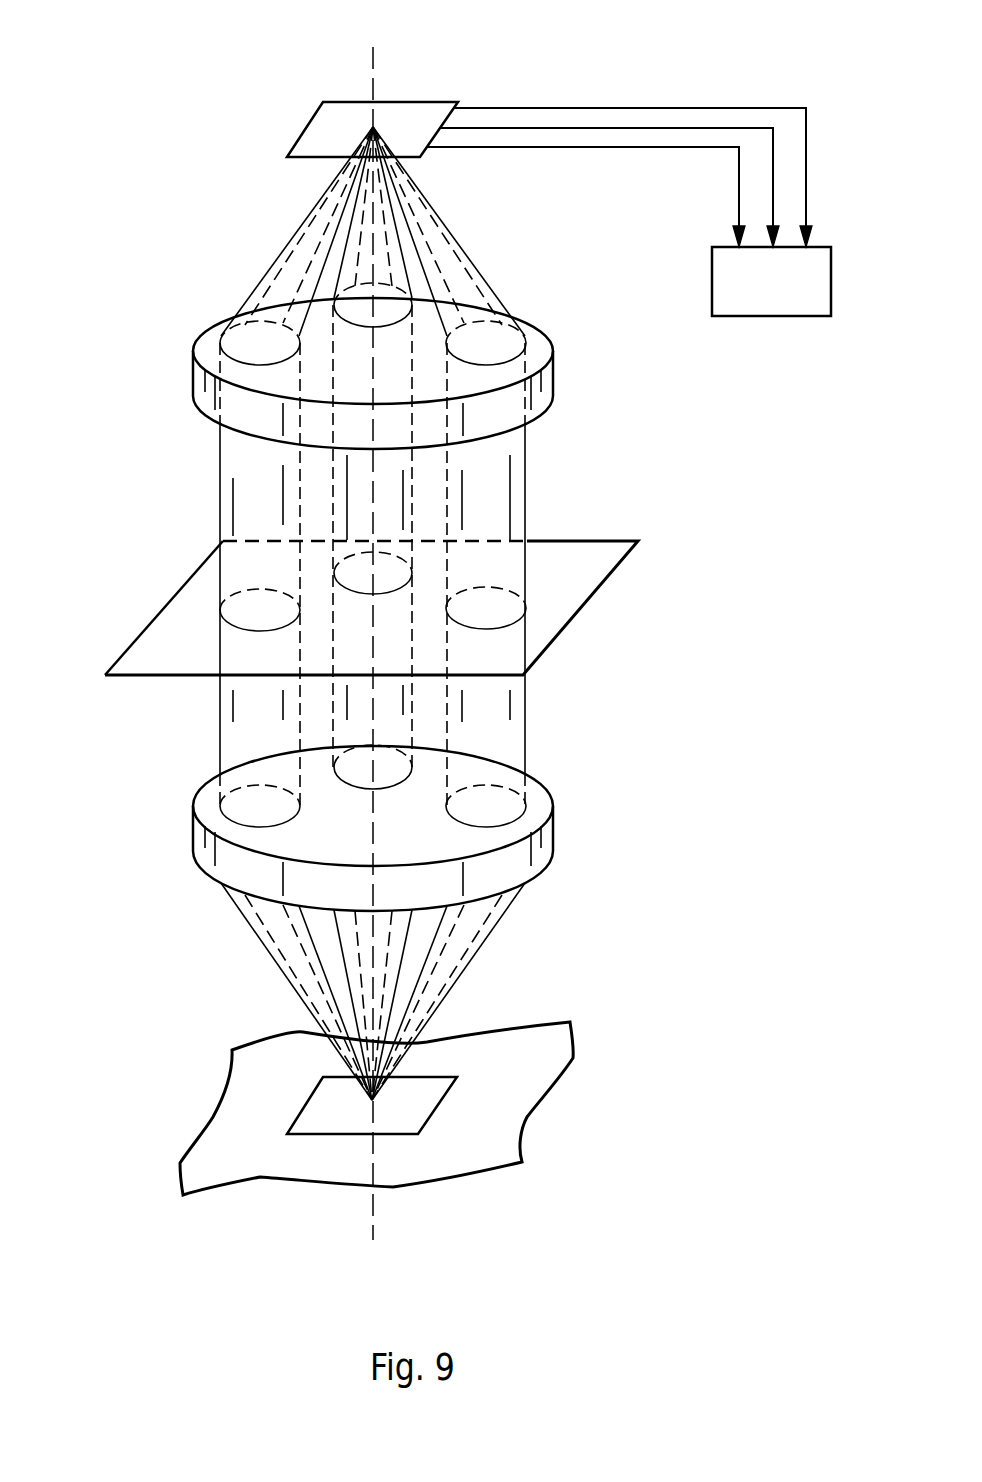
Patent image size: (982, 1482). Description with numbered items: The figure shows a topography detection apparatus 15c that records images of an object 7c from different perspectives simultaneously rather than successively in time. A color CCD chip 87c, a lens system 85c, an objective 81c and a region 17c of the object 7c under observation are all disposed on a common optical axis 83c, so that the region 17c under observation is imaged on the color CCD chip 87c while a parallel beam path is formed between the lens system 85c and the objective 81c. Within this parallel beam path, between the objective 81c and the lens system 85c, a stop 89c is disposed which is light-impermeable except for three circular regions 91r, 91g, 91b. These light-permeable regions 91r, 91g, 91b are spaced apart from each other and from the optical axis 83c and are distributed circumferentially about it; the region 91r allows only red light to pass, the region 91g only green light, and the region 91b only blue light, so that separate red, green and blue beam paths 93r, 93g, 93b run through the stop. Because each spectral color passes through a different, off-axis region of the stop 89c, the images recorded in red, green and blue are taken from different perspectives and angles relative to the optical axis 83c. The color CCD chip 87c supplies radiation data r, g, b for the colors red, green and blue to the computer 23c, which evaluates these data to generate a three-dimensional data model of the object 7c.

The color CCD chip 87c is at (428, 102).
The red radiation data r is at (587, 108).
The green radiation data g is at (628, 128).
The blue radiation data b is at (677, 147).
The computer 23c is at (797, 317).
The topography detection apparatus 15c is at (140, 298).
The lens system 85c is at (555, 368).
The blue beam path 93b is at (219, 467).
The green beam path 93g is at (413, 493).
The red beam path 93r is at (533, 442).
The stop 89c is at (623, 560).
The blue light-permeable circular region 91b is at (230, 629).
The green light-permeable circular region 91g is at (403, 563).
The red light-permeable circular region 91r is at (513, 627).
The objective 81c is at (555, 823).
The optical axis 83c is at (375, 1212).
The region of the object under observation 17c is at (430, 1118).
The object 7c is at (180, 1178).